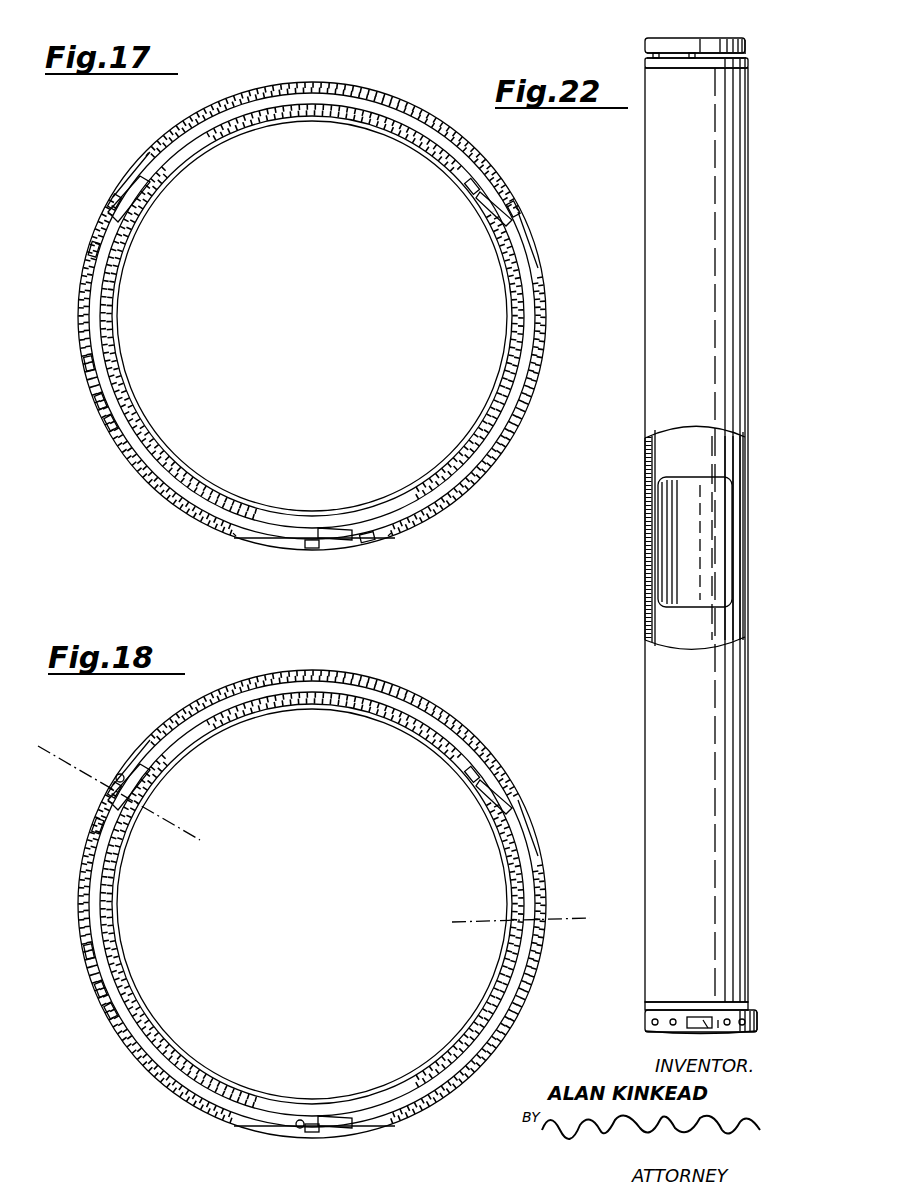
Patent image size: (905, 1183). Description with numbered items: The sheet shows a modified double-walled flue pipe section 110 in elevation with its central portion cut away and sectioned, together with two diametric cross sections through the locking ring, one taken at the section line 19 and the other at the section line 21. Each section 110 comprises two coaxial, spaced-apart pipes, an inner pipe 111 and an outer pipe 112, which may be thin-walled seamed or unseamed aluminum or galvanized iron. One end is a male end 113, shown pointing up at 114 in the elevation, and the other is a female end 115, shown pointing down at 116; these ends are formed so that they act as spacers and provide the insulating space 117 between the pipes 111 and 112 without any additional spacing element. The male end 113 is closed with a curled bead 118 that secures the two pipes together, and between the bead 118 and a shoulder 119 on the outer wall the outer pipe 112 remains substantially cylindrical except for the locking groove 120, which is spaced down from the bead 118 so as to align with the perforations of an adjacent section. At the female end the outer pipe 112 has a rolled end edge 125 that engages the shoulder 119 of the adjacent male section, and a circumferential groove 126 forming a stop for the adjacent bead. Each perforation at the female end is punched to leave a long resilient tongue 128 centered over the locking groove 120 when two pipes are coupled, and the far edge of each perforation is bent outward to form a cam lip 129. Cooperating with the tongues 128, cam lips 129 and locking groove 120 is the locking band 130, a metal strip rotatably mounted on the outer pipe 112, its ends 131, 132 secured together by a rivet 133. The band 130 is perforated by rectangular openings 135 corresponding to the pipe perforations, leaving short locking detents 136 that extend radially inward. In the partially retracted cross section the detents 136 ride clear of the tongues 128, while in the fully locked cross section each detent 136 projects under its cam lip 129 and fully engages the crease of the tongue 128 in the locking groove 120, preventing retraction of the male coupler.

In FIG. 18, the section line 19- 19 is at (119, 782).
In FIG. 18, the section line 21- 21 is at (519, 920).
In FIG. 22, the double-walled flue pipe section 110 is at (638, 429).
In FIG. 17, the inner pipe 111 is at (512, 281).
In FIG. 18, the inner pipe 111 is at (512, 898).
In FIG. 22, the inner pipe 111 is at (658, 546).
In FIG. 17, the outer pipe 112 is at (515, 258).
In FIG. 18, the outer pipe 112 is at (522, 872).
In FIG. 22, the outer pipe 112 is at (648, 524).
In FIG. 22, the male end 113 is at (746, 44).
In FIG. 22, the male end (upward position) 114 is at (716, 38).
In FIG. 22, the female end 115 is at (646, 1022).
In FIG. 22, the female end (downward position) 116 is at (648, 1034).
In FIG. 22, the insulating space 117 is at (738, 504).
In FIG. 22, the curled bead 118 is at (648, 40).
In FIG. 22, the shoulder 119 is at (648, 68).
In FIG. 17, the locking groove 120 is at (533, 322).
In FIG. 18, the locking groove 120 is at (470, 758).
In FIG. 22, the locking groove 120 is at (648, 56).
In FIG. 22, the rolled end edge 125 is at (757, 1026).
In FIG. 22, the circumferential groove 126 is at (748, 1004).
In FIG. 17, the tongue 128 is at (112, 216).
In FIG. 18, the tongue 128 is at (110, 804).
In FIG. 17, the cam lip 129 is at (112, 188).
In FIG. 18, the cam lip 129 is at (112, 790).
In FIG. 17, the locking band 130 is at (275, 84).
In FIG. 18, the locking band 130 is at (322, 674).
In FIG. 22, the locking band 130 is at (720, 1028).
In FIG. 17, the band end 131 is at (84, 366).
In FIG. 18, the band end 131 is at (82, 905).
In FIG. 17, the band end 132 is at (104, 434).
In FIG. 18, the band end 132 is at (104, 976).
In FIG. 17, the rivet 133 is at (94, 408).
In FIG. 18, the rivet 133 is at (90, 940).
In FIG. 17, the rectangular opening 135 is at (147, 152).
In FIG. 18, the rectangular opening 135 is at (176, 718).
In FIG. 22, the rectangular opening 135 is at (697, 1018).
In FIG. 17, the locking detent 136 is at (90, 244).
In FIG. 18, the locking detent 136 is at (116, 778).
In FIG. 22, the locking detent 136 is at (708, 1028).